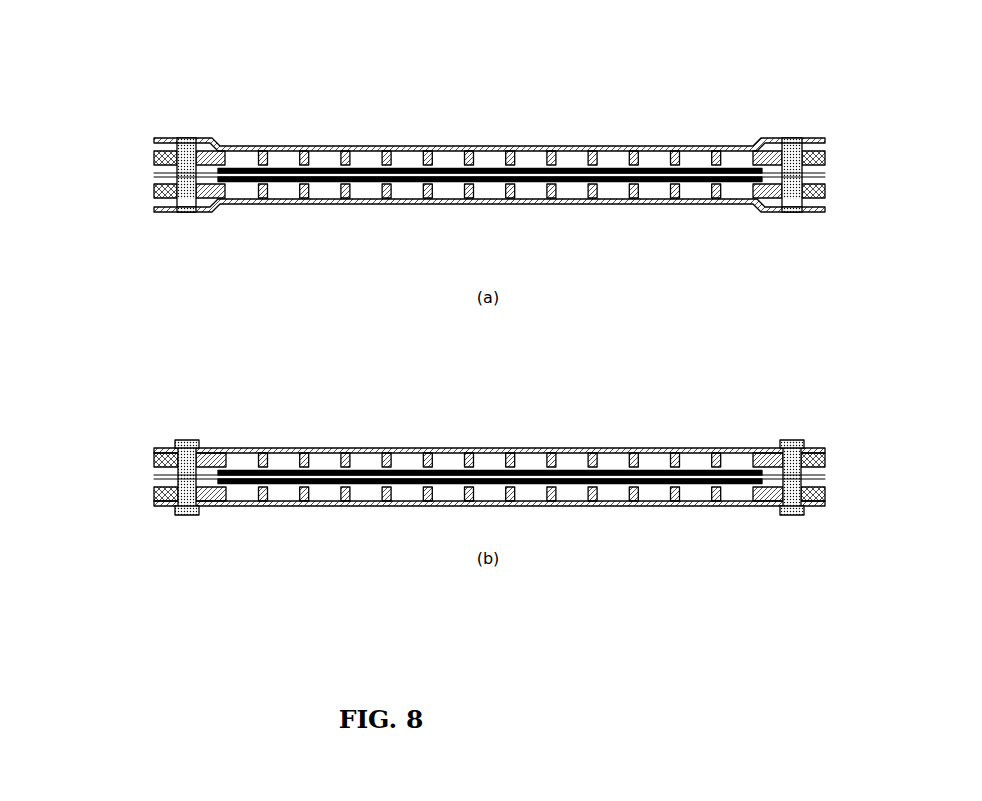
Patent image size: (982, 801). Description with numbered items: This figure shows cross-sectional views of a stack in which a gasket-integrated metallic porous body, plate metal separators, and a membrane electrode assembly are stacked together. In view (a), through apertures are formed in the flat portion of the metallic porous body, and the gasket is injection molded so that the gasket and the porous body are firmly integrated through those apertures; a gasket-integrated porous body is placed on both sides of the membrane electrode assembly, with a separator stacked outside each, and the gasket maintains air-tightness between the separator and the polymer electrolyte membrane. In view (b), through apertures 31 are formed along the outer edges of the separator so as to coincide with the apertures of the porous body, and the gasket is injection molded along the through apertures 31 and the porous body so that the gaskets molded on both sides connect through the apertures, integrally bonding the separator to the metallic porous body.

The through aperture 31 is at (185, 442).